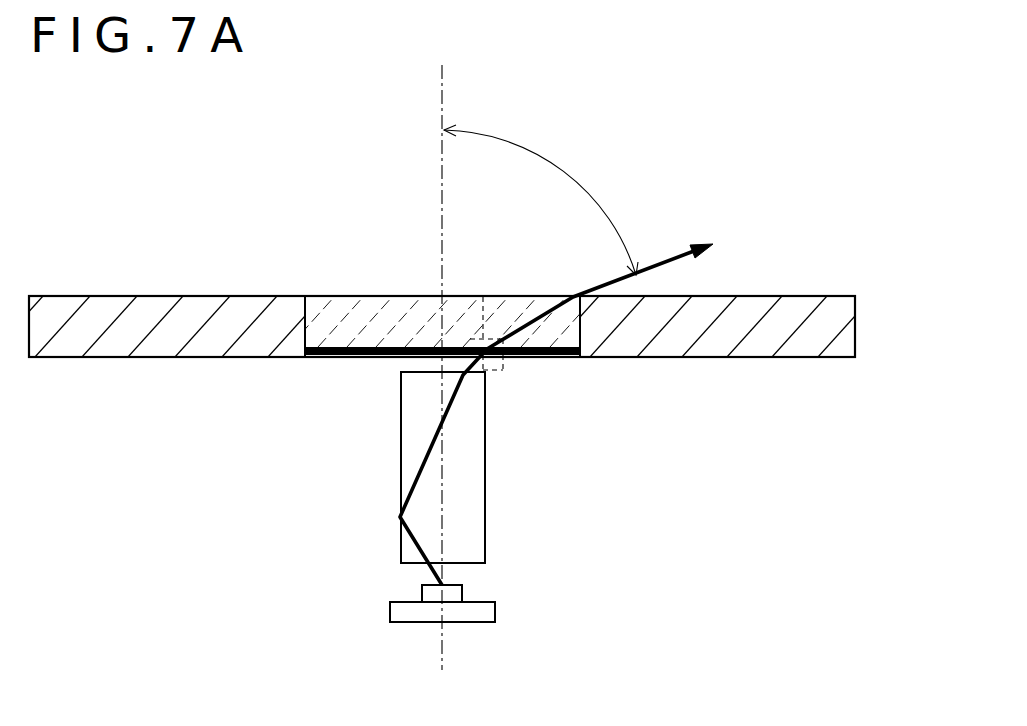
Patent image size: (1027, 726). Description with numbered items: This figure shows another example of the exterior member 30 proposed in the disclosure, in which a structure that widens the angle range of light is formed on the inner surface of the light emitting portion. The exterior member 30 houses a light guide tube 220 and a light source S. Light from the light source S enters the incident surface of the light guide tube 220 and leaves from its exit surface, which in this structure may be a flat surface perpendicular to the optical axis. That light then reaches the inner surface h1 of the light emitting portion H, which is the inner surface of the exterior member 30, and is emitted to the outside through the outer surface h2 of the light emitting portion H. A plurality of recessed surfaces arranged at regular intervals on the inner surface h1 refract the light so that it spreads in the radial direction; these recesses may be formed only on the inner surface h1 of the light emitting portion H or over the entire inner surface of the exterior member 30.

The exterior member 30 is at (133, 296).
The light emitting portion H is at (333, 296).
The outer surface of the light emitting portion h2 is at (387, 296).
The inner surface of the light emitting portion h1 is at (336, 357).
The normal line / incident point B is at (483, 297).
The light guide tube 220 is at (485, 468).
The light source S is at (450, 595).